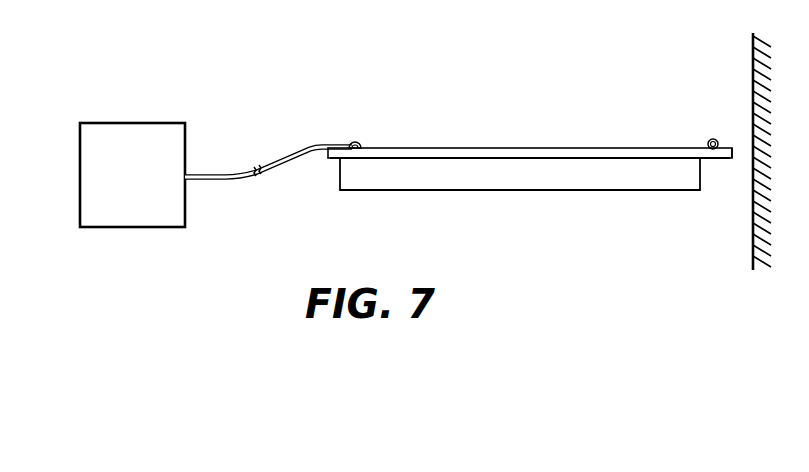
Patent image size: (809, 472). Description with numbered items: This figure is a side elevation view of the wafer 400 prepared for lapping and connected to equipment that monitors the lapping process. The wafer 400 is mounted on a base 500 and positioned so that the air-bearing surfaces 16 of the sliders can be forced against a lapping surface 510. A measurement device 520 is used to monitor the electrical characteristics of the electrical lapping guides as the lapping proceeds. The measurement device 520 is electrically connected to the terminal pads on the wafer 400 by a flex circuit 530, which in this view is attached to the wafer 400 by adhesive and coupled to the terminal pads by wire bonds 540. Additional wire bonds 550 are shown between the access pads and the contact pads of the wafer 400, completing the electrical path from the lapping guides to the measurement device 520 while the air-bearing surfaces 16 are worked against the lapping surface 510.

The measurement device 520 is at (145, 123).
The flex circuit 530 is at (290, 150).
The wire bonds 540 is at (353, 142).
The wafer 400 is at (520, 148).
The base 500 is at (432, 190).
The wire bonds 550 is at (709, 141).
The air-bearing surfaces 16 is at (740, 156).
The lapping surface 510 is at (752, 65).